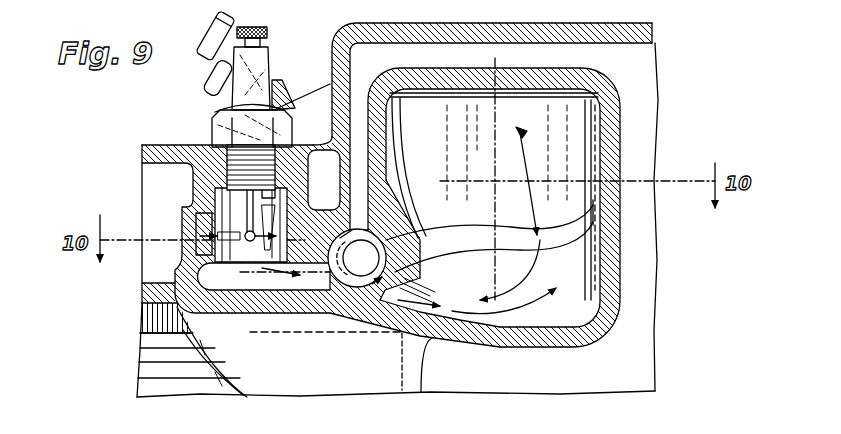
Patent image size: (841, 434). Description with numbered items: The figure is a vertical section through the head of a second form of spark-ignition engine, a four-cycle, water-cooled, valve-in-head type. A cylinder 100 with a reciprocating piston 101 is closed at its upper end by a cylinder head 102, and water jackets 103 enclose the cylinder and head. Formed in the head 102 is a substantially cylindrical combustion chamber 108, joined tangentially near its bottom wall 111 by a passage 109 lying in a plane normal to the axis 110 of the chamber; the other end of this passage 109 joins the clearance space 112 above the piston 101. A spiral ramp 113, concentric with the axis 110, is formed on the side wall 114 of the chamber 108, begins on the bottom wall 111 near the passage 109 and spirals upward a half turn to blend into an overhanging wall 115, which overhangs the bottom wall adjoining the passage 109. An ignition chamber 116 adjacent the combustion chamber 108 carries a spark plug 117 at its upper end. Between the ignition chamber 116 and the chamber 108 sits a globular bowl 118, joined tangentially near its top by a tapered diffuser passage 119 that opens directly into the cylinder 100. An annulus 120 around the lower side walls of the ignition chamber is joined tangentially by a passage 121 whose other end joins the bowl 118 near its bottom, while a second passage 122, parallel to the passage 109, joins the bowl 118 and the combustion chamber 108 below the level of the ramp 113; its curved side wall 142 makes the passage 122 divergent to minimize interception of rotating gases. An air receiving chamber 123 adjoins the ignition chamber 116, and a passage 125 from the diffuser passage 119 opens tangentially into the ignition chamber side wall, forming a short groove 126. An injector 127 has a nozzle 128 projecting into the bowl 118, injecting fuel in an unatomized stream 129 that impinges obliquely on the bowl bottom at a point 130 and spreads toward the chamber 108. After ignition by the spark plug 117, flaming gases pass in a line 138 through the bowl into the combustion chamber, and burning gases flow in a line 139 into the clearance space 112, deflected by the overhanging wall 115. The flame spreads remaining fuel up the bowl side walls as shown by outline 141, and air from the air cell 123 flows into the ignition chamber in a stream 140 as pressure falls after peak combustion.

The cylinder 100 is at (393, 378).
The piston 101 is at (150, 352).
The cylinder head 102 is at (163, 144).
The water jacket 103 is at (612, 62).
The combustion chamber 108 is at (598, 145).
The passage 109 is at (427, 233).
The axis 110 is at (495, 108).
The bottom wall 111 is at (498, 323).
The clearance space 112 is at (145, 313).
The spiral ramp 113 is at (392, 235).
The side wall 114 is at (598, 272).
The overhanging wall 115 is at (503, 230).
The ignition chamber 116 is at (213, 195).
The spark plug 117 is at (267, 67).
The globular bowl 118 is at (395, 225).
The passage 119 is at (303, 147).
The annulus 120 is at (197, 263).
The passage 121 is at (307, 308).
The second passage 122 is at (450, 264).
The air receiving chamber 123 is at (193, 221).
The second passage 125 is at (268, 253).
The groove 126 is at (246, 262).
The injector 127 is at (317, 183).
The nozzle 128 is at (328, 195).
The unatomized stream 129 is at (333, 208).
The point 130 is at (321, 302).
The line 138 is at (282, 292).
The line 139 is at (558, 152).
The stream 140 is at (207, 262).
The outline 141 is at (388, 300).
The side wall 142 is at (483, 305).